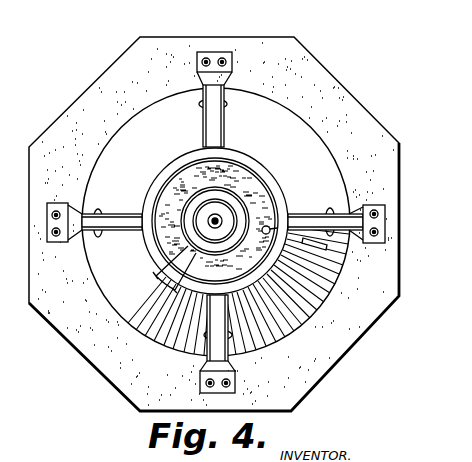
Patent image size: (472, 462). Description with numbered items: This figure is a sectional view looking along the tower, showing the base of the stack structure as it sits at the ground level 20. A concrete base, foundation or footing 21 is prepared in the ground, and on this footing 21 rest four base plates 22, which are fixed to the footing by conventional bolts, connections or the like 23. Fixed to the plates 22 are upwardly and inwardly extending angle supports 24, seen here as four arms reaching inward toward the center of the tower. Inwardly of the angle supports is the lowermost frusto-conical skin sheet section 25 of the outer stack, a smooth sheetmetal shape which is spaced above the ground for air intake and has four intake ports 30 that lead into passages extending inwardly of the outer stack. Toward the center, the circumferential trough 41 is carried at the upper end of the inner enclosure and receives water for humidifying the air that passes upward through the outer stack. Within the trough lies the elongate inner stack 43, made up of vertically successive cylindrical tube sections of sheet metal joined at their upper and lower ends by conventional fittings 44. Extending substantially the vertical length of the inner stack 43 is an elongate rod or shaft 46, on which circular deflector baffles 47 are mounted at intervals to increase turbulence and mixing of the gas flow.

The ground level 20 is at (21, 454).
The footing 21 is at (133, 55).
The base plates 22 is at (67, 209).
The bolts 23 is at (382, 230).
The angle supports 24 is at (218, 113).
The frusto-conical skin sheet section 25 is at (156, 328).
The intake ports 30 is at (199, 105).
The circumferential trough 41 is at (177, 187).
The inner stack 43 is at (166, 262).
The fittings 44 is at (172, 283).
The rod 46 is at (216, 217).
The deflector baffles 47 is at (220, 219).